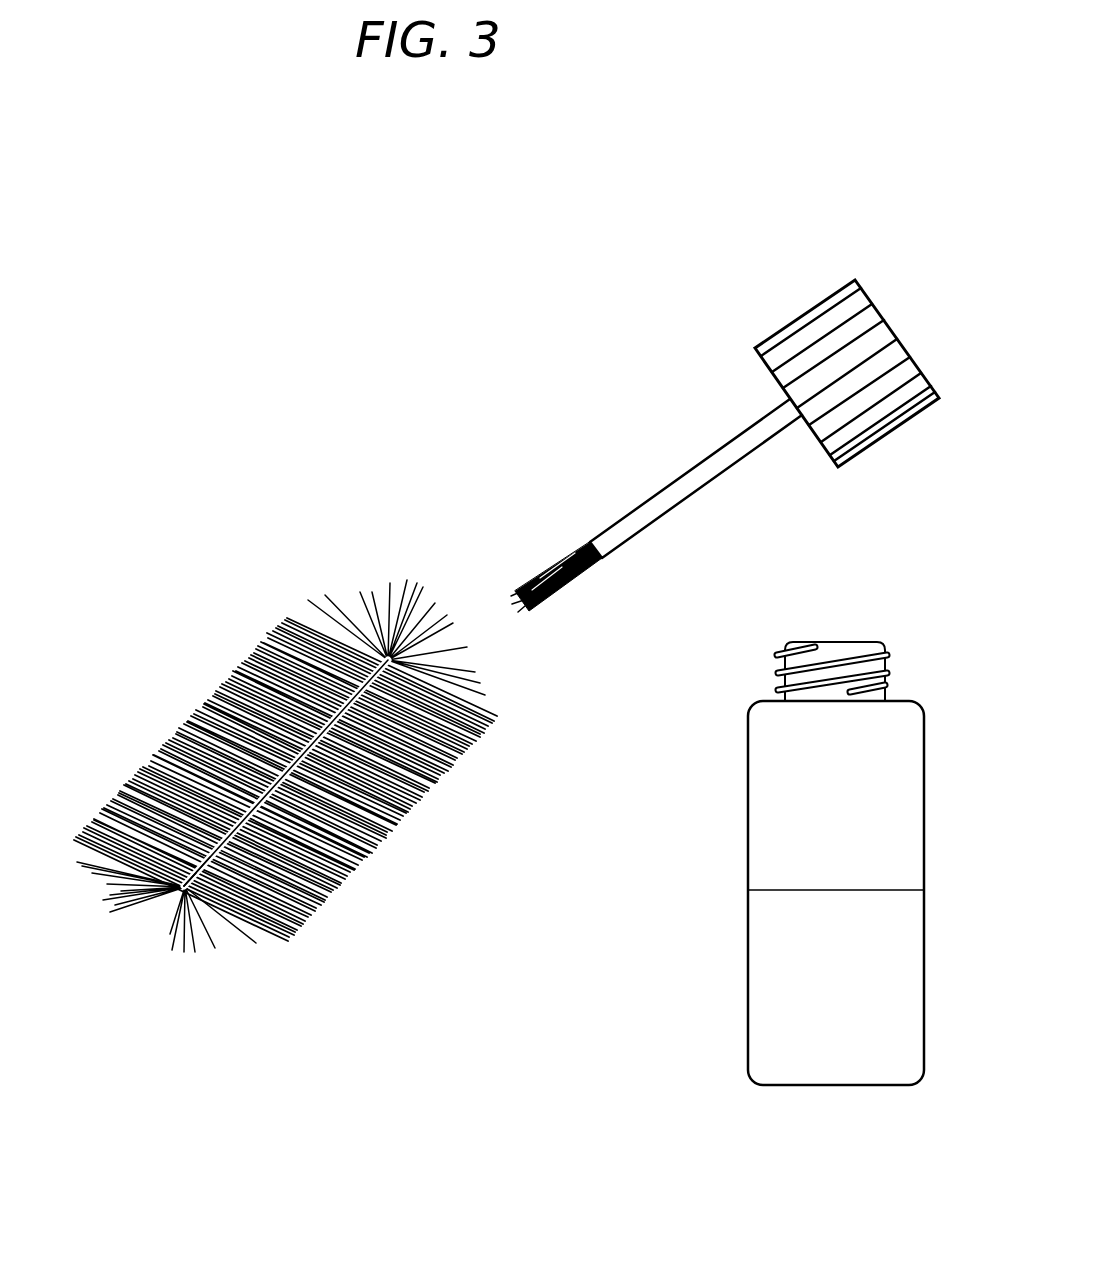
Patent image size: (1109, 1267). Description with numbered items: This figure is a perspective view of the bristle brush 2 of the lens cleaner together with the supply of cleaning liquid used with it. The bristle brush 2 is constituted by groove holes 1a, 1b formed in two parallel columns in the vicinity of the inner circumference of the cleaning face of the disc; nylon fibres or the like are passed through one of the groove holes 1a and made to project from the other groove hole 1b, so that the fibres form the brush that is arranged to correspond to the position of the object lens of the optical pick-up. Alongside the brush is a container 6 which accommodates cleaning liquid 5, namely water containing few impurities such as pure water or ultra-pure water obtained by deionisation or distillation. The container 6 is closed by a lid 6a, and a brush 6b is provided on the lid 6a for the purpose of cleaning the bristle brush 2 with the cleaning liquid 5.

The groove hole 1a is at (175, 895).
The groove hole 1b is at (185, 893).
The bristle brush 2 is at (262, 642).
The cleaning liquid 5 is at (765, 976).
The container 6 is at (909, 716).
The lid 6a is at (777, 332).
The brush 6b is at (548, 567).